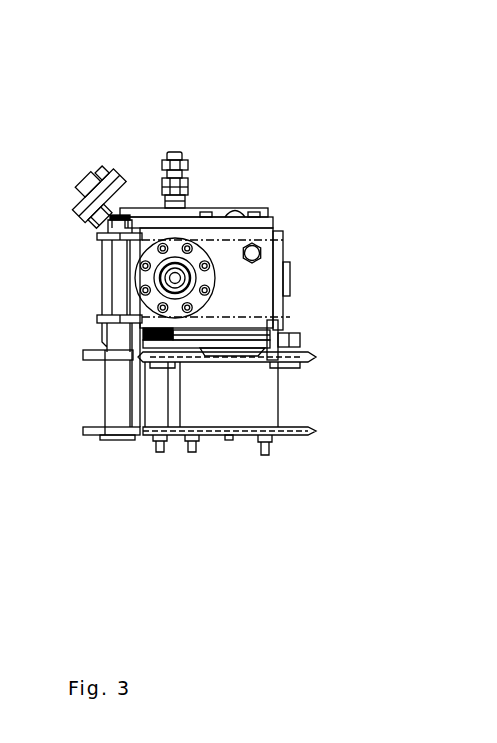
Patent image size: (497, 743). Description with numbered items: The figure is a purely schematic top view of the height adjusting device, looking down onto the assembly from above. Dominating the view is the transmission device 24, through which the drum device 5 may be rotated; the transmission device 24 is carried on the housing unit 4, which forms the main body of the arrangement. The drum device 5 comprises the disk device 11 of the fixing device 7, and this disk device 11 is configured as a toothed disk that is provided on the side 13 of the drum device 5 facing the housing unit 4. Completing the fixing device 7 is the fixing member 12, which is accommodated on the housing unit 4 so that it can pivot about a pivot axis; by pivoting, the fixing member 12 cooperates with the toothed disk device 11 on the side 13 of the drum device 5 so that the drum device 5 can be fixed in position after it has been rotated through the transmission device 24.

The housing unit 4 is at (243, 290).
The transmission device 24 is at (195, 277).
The fixing member 12 is at (127, 430).
The drum device 5 is at (250, 415).
The disk device 11 is at (278, 360).
The side 13 is at (302, 350).
The fixing device 7 is at (84, 383).